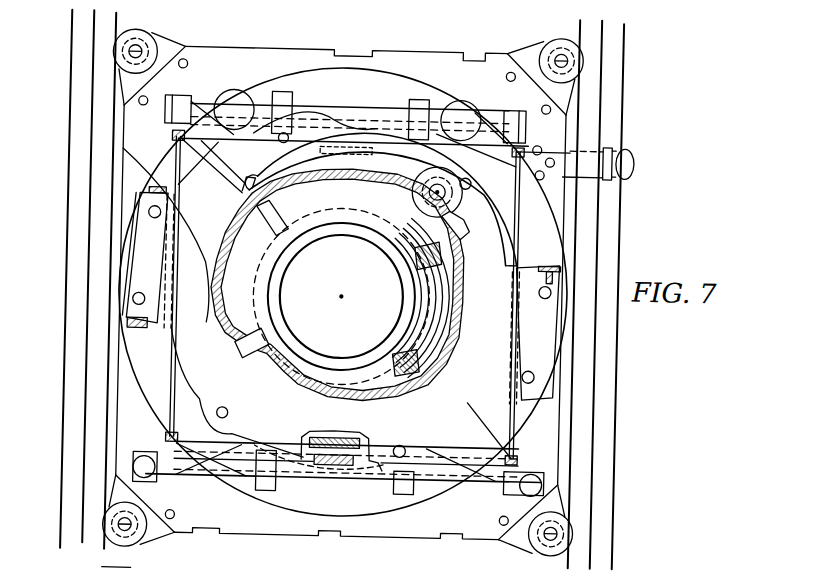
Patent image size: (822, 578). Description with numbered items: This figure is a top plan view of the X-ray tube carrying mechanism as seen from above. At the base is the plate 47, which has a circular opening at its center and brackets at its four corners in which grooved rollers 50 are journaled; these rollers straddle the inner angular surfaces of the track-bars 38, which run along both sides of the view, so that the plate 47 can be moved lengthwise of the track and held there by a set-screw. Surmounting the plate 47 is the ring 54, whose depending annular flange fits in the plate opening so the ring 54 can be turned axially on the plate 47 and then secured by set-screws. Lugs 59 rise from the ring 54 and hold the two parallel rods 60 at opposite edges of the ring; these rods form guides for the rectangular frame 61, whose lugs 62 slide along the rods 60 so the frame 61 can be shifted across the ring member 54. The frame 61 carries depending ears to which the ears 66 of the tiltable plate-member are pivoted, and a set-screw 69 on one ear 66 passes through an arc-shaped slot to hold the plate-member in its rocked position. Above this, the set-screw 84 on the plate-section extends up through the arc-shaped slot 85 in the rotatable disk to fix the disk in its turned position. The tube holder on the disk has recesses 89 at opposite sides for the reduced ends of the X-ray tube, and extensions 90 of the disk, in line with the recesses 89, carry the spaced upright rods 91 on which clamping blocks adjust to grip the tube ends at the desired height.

The track-bars 38 is at (335, 289).
The plate 47 is at (136, 423).
The rollers 50 is at (136, 40).
The ring 54 is at (149, 376).
The lugs 59 is at (175, 154).
The parallel rods 60 is at (381, 110).
The rectangular frame 61 is at (516, 223).
The lugs 62 is at (279, 95).
The ears 66 is at (322, 436).
The set-screw 69 is at (350, 466).
The set-screw 84 is at (457, 222).
The arc-shaped slot 85 is at (241, 192).
The recesses 89 is at (240, 263).
The extensions 90 is at (132, 257).
The upright rods 91 is at (107, 571).